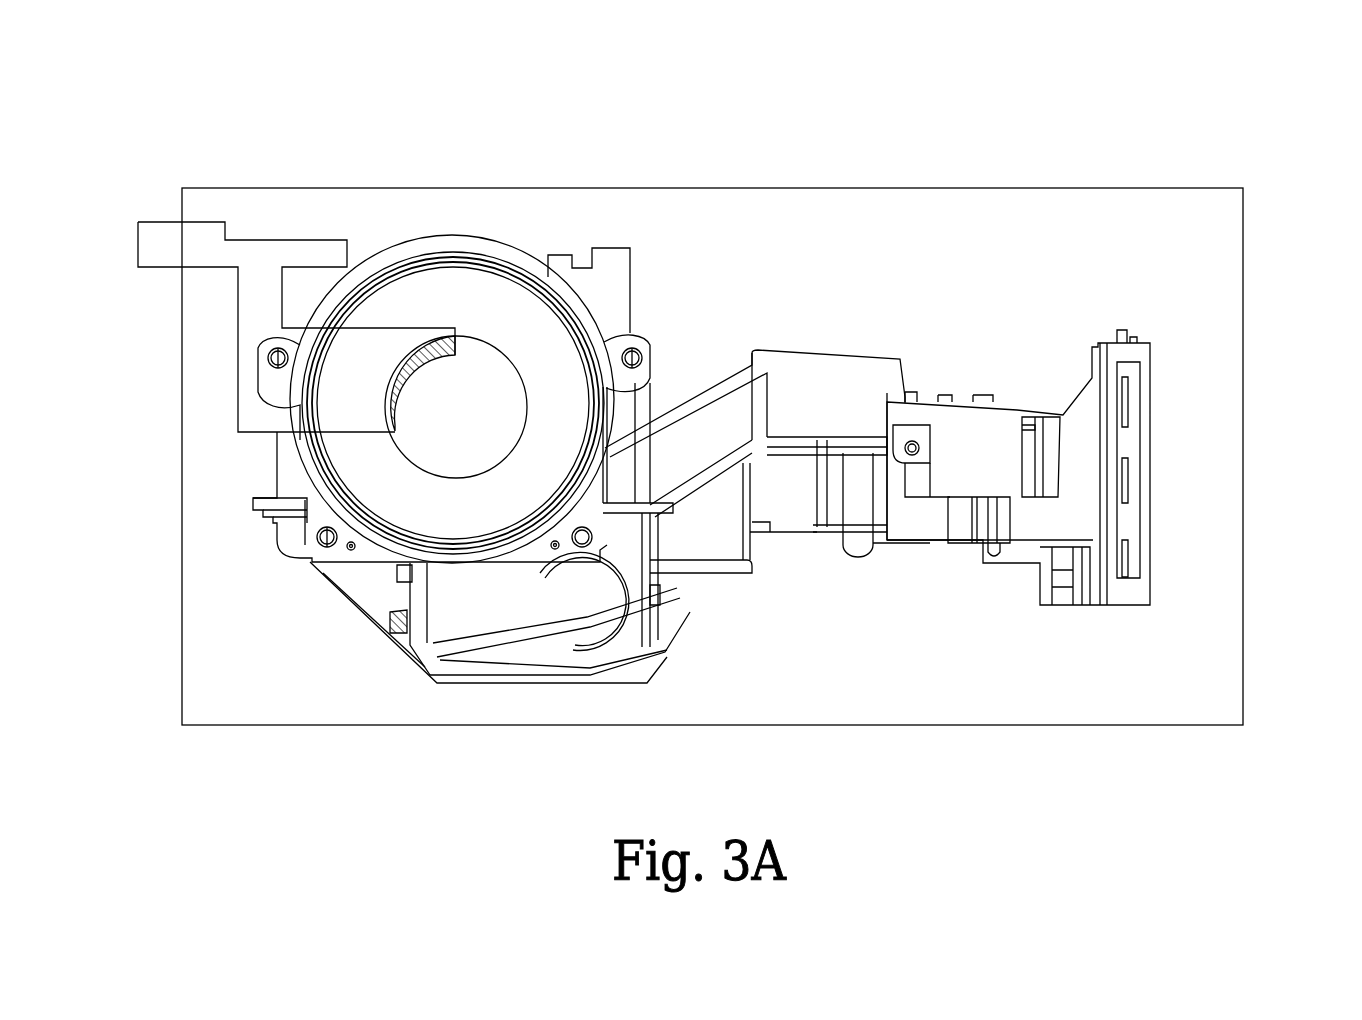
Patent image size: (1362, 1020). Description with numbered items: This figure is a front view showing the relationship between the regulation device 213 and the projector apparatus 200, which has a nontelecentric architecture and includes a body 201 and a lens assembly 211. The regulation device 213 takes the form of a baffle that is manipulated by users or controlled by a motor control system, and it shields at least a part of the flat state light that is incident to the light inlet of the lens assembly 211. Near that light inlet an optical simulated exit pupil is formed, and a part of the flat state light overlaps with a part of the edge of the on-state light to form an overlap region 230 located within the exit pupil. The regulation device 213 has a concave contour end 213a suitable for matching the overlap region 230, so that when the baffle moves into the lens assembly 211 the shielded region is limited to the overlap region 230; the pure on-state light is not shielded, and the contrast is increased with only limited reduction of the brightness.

The projector apparatus 200 is at (1361, 72).
The body 201 is at (1097, 188).
The lens assembly 211 is at (512, 313).
The regulation device 213 is at (156, 246).
The concave contour end 213a is at (404, 395).
The overlap region 230 is at (428, 336).